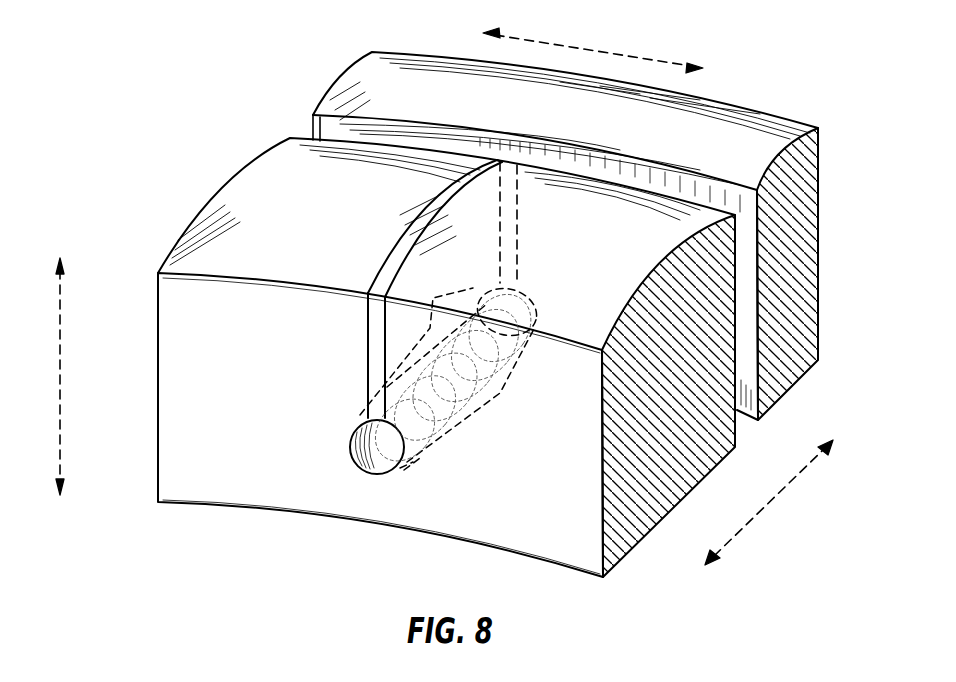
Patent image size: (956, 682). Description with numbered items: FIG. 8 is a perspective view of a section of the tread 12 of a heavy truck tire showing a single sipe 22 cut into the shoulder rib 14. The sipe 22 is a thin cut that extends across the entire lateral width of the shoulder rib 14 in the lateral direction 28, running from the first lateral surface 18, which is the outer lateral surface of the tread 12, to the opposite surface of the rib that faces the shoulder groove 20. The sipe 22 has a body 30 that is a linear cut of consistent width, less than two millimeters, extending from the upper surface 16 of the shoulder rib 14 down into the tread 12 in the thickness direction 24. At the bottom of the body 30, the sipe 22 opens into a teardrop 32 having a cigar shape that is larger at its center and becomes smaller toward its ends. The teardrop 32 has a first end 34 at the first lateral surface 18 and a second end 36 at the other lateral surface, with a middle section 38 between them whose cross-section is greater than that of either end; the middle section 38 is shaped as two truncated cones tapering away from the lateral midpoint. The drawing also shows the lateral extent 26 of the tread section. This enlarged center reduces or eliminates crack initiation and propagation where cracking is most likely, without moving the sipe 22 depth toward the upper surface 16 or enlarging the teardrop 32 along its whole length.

The tread 12 is at (813, 60).
The shoulder rib 14 is at (158, 318).
The upper surface 16 is at (268, 182).
The first lateral surface 18 is at (172, 402).
The shoulder groove 20 is at (353, 130).
The sipe 22 is at (367, 317).
The thickness direction 24 is at (60, 382).
The length dimension 26 is at (580, 47).
The lateral direction 28 is at (777, 497).
The body 30 is at (367, 350).
The teardrop 32 is at (352, 440).
The first end 34 is at (407, 457).
The second end 36 is at (527, 295).
The middle section 38 is at (505, 395).